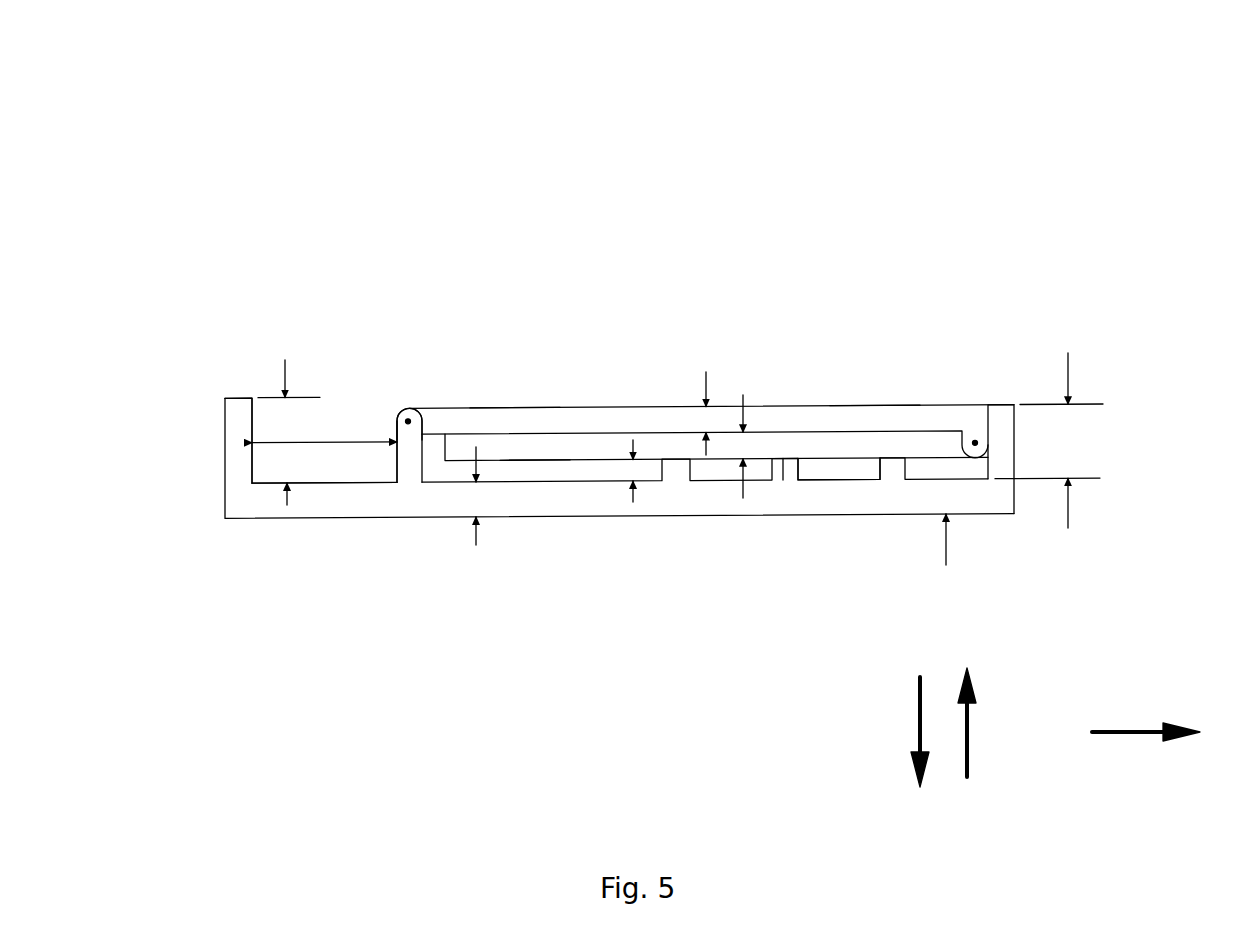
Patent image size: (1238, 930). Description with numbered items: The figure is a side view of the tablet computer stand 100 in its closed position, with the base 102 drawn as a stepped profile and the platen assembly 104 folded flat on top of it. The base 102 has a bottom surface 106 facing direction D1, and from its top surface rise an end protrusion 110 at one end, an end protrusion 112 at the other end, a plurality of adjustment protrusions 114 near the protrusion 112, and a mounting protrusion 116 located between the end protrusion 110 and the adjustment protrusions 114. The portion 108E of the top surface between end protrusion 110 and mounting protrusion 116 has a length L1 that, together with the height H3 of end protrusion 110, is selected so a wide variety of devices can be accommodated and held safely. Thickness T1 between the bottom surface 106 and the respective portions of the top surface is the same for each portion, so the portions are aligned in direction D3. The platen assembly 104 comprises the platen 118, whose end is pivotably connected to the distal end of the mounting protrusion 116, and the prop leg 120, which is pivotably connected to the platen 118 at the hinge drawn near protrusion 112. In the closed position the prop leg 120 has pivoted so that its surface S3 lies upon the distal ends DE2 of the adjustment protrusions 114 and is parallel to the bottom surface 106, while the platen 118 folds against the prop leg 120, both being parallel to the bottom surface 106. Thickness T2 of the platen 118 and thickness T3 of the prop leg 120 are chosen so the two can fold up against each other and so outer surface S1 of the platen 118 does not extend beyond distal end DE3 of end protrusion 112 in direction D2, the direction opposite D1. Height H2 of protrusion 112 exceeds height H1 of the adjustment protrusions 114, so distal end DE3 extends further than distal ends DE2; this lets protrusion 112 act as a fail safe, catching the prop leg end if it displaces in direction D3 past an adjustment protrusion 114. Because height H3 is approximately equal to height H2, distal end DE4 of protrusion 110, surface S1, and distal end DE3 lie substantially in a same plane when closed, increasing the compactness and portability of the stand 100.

The stand 100 is at (651, 321).
The base 102 is at (206, 432).
The platen assembly 104 is at (770, 373).
The bottom surface 106 is at (237, 519).
The portion of the top surface 108E is at (333, 483).
The end protrusion 110 is at (237, 462).
The end protrusion 112 is at (1005, 451).
The adjustment protrusions 114 is at (677, 473).
The mounting protrusion 116 is at (408, 447).
The platen 118 is at (875, 405).
The prop leg 120 is at (838, 458).
The distal end of protrusion 110 DE4 is at (237, 398).
The distal end of end protrusion 112 DE3 is at (1002, 405).
The distal end of the adjustment protrusions DE2 is at (783, 480).
The length of portion 108E L1 is at (352, 442).
The surface of platen S1 is at (507, 408).
The surface of prop leg S3 is at (535, 460).
The thickness T1 is at (476, 541).
The thickness of platen T2 is at (706, 372).
The thickness of prop leg T3 is at (743, 490).
The height of protrusions 114 H1 is at (633, 498).
The height of end protrusion 112 H2 is at (1068, 505).
The height of end protrusion 110 H3 is at (287, 503).
The direction D1 is at (918, 708).
The direction D2 is at (968, 731).
The direction D3 is at (1134, 732).